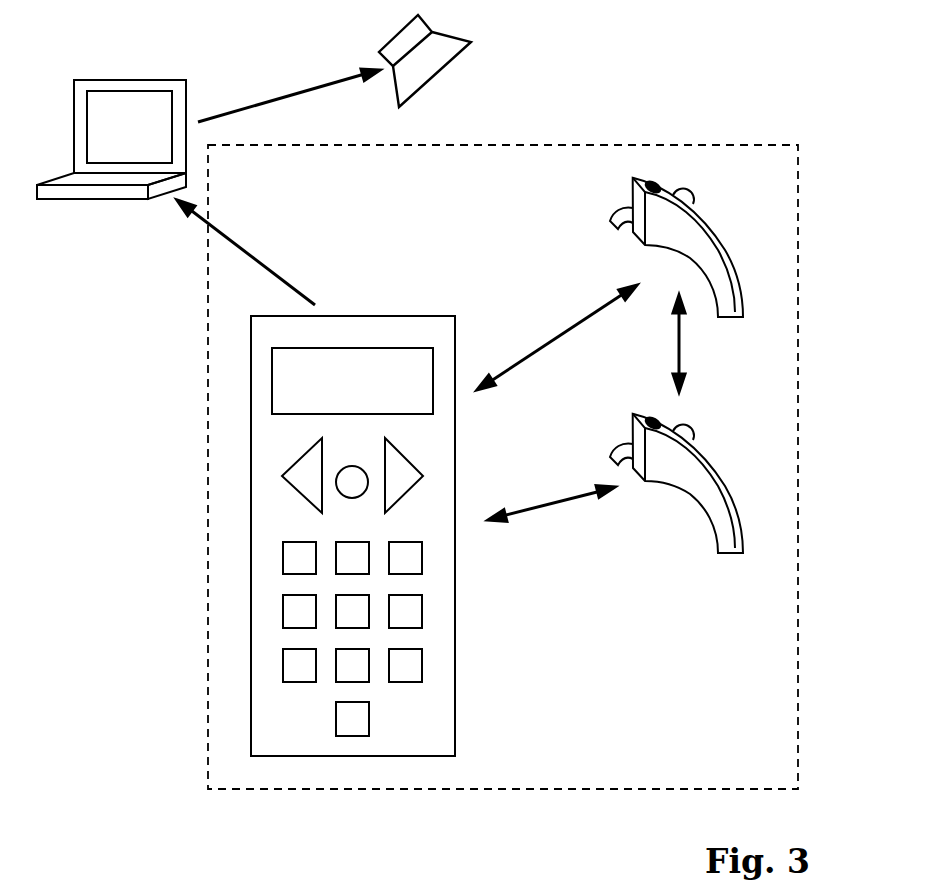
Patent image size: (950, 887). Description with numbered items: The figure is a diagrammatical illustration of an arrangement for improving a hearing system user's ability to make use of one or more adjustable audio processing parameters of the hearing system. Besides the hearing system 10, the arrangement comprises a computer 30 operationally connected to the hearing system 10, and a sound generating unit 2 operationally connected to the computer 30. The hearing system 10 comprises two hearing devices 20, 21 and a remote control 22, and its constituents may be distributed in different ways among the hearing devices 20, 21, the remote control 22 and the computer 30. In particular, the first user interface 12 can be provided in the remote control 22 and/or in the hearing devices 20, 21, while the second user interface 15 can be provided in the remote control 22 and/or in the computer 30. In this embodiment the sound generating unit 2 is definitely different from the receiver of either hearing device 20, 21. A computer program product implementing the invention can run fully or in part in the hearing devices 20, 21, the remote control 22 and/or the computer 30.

The sound generating unit 2 is at (445, 27).
The hearing system 10 is at (767, 142).
The first user interface 12 is at (237, 345).
The second user interface 15 is at (221, 590).
The hearing device 20 is at (723, 240).
The hearing device 21 is at (723, 465).
The remote control 22 is at (296, 578).
The computer 30 is at (78, 208).